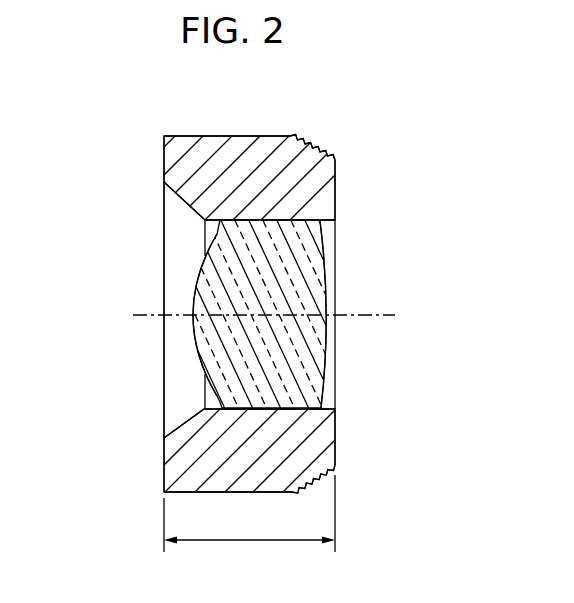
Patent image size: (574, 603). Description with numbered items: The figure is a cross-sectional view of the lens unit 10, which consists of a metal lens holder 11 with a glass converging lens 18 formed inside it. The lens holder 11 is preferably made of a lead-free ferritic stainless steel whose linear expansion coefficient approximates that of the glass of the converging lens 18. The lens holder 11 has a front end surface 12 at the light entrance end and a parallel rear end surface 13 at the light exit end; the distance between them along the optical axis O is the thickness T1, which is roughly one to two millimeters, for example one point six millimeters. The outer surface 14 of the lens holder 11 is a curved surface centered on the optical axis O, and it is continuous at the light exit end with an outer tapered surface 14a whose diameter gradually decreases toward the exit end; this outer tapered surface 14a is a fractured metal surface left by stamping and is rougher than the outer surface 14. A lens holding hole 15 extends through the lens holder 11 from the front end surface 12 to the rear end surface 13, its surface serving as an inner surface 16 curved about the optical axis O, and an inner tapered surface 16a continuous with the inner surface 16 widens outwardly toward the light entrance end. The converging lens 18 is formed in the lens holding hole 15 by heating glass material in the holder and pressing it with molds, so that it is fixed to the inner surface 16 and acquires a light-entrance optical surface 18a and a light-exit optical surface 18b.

The lens unit 10 is at (400, 217).
The lens holder 11 is at (266, 127).
The front end surface 12 is at (164, 168).
The rear end surface 13 is at (335, 175).
The outer surface 14 is at (202, 136).
The outer tapered surface 14a is at (313, 148).
The lens holding hole 15 is at (254, 318).
The inner surface 16 is at (291, 224).
The inner tapered surface 16a is at (186, 205).
The converging lens 18 is at (307, 377).
The light-entrance optical surface 18a is at (197, 339).
The light-exit optical surface 18b is at (327, 342).
The optical axis O is at (273, 319).
The thickness T1 is at (249, 513).